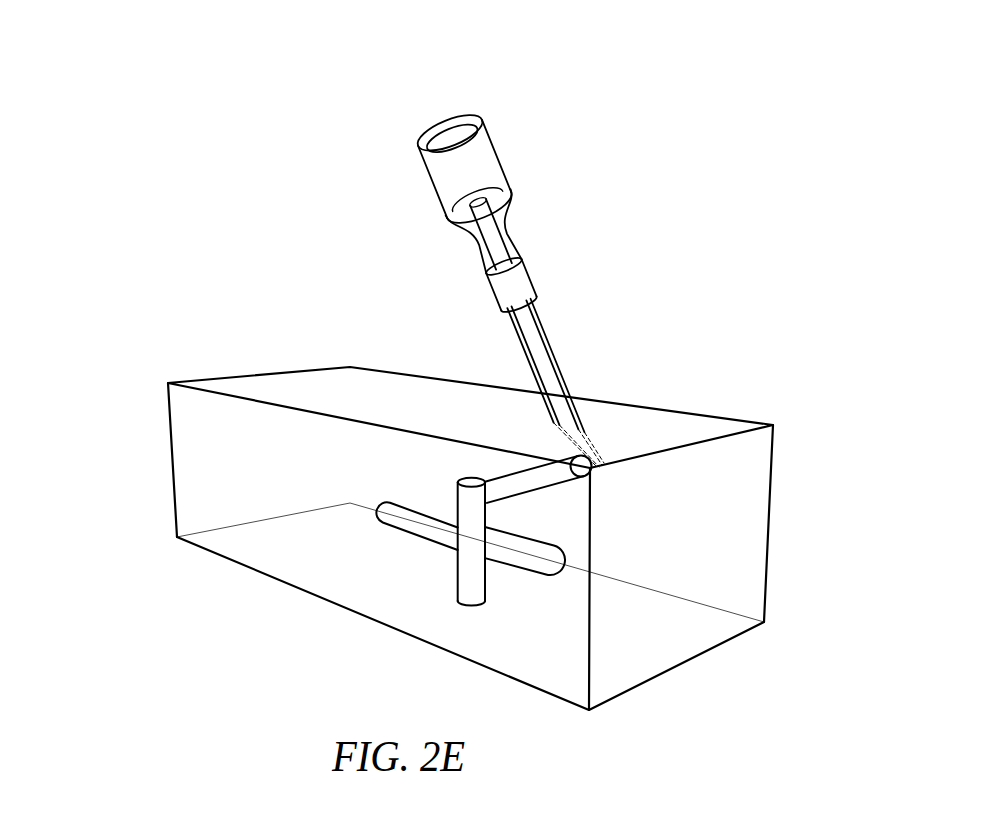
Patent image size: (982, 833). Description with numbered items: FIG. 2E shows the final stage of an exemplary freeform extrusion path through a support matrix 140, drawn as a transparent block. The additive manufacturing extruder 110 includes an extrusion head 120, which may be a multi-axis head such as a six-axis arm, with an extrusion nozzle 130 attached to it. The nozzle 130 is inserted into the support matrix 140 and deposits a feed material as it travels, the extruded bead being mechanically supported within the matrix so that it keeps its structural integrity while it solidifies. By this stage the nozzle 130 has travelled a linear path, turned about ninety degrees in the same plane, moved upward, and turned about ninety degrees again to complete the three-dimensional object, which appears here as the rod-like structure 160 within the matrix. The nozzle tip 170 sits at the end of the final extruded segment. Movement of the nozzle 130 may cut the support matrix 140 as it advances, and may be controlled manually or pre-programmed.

The additive manufacturing extruder 110 is at (430, 264).
The extrusion head 120 is at (492, 106).
The extrusion nozzle 130 is at (593, 423).
The support matrix 140 is at (220, 460).
The fixture / rod assembly 160 is at (418, 546).
The needle tip / rod end 170 is at (599, 469).